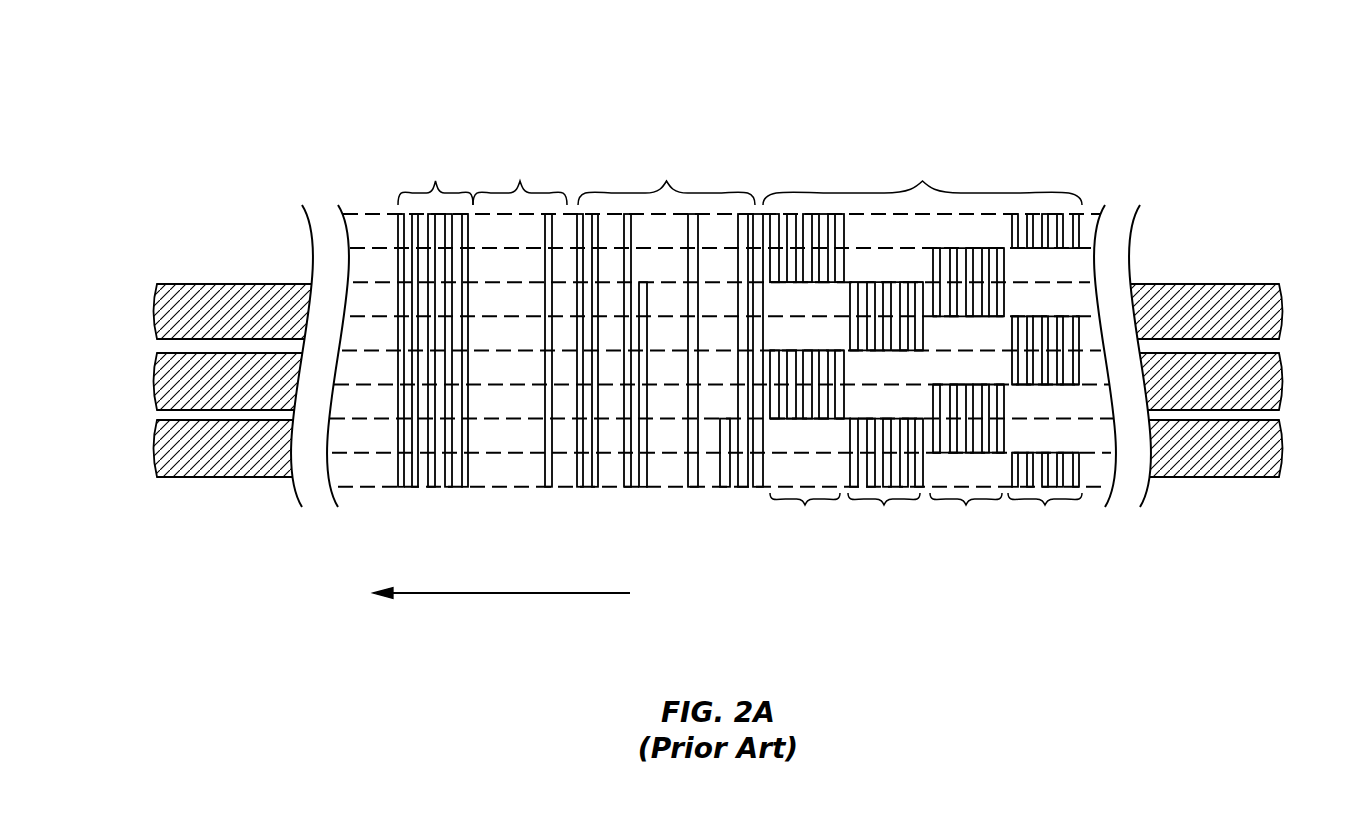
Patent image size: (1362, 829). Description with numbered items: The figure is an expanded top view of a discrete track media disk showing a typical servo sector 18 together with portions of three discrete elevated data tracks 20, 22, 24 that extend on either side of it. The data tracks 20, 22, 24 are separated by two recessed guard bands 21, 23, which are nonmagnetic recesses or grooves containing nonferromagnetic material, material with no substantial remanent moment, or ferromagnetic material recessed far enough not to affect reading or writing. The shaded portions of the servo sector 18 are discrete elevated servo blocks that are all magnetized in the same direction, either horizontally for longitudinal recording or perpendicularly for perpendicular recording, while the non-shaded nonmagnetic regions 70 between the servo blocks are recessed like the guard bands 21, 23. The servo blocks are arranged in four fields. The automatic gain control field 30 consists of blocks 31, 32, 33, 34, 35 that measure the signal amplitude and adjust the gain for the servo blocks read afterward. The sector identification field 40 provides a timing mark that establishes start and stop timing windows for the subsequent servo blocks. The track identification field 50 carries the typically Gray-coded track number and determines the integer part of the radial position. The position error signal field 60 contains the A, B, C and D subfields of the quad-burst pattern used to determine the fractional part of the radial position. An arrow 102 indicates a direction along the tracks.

The servo sector 18 is at (1080, 136).
The data track 20 is at (168, 450).
The guard band 21 is at (162, 415).
The data track 22 is at (168, 378).
The guard band 23 is at (162, 347).
The data track 24 is at (168, 305).
The automatic gain control (AGC) field 30 is at (434, 365).
The AGC servo block 31 is at (401, 491).
The AGC servo block 32 is at (417, 492).
The AGC servo block 33 is at (433, 492).
The AGC servo block 34 is at (449, 492).
The AGC servo block 35 is at (465, 492).
The sector identification (SID) field 40 is at (572, 200).
The track identification (TID) field 50 is at (873, 344).
The position error signal (PES) field 60 is at (1053, 195).
The nonmagnetic region 70 is at (944, 255).
The direction of disk rotation 102 is at (547, 593).